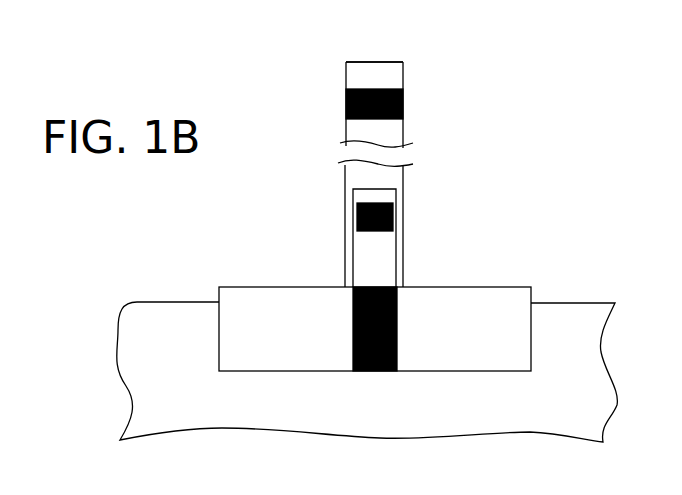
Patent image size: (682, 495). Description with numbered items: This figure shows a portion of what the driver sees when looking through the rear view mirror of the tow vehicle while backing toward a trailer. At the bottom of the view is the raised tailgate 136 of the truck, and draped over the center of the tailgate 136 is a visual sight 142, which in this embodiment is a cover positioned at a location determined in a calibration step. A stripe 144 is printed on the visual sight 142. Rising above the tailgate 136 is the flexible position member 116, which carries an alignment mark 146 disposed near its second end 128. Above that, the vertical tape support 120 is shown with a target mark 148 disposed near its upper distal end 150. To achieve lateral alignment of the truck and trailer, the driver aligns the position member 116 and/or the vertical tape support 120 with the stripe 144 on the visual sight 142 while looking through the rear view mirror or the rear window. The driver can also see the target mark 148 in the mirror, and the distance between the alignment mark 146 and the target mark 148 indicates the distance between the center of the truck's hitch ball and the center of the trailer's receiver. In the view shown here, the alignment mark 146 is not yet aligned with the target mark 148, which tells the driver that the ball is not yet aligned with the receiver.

The upper distal end 150 is at (375, 62).
The target mark 148 is at (403, 104).
The vertical tape support 120 is at (403, 135).
The second end 128 is at (373, 189).
The alignment mark 146 is at (393, 213).
The flexible position member 116 is at (381, 257).
The stripe 144 is at (397, 323).
The visual sight 142 is at (288, 340).
The tailgate 136 is at (188, 413).